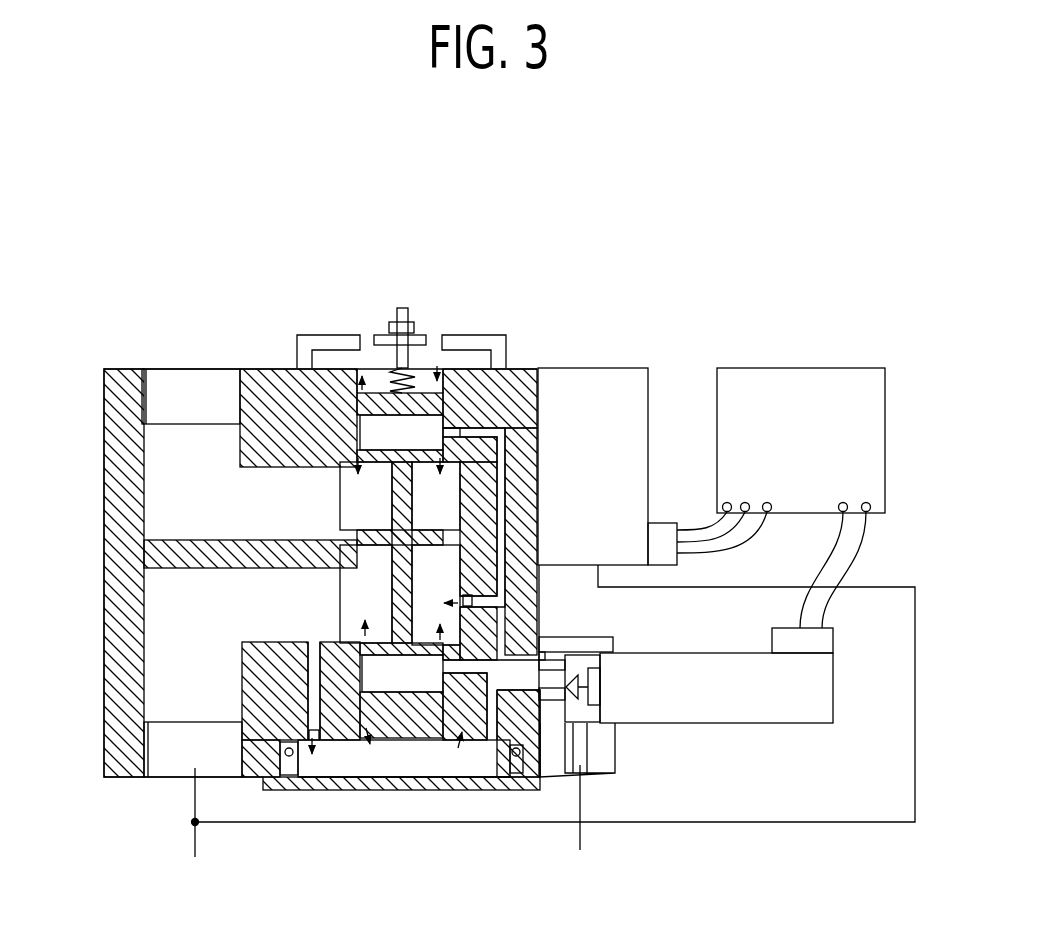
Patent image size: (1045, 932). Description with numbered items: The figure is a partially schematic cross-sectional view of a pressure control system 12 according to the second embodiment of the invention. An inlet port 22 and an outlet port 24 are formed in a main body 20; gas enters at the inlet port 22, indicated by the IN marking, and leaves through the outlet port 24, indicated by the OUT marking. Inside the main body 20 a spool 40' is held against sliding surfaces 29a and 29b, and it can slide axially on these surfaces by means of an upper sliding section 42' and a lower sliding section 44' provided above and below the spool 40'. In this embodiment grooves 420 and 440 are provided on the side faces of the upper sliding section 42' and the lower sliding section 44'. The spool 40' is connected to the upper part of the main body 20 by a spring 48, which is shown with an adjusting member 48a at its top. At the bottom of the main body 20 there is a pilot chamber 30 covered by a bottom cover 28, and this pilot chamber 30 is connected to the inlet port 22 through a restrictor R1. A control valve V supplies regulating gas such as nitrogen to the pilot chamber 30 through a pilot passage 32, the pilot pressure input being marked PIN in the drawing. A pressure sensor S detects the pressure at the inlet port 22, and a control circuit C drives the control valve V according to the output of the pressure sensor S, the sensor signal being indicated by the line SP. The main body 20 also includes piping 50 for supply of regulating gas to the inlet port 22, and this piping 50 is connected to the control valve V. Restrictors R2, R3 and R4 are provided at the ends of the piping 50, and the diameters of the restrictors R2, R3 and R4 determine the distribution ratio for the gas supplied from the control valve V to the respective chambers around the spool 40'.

The pressure control system 12 is at (118, 352).
The main body 20 is at (108, 598).
The inlet port 22 is at (172, 760).
The outlet port 24 is at (160, 380).
The bottom cover 28 is at (487, 789).
The pilot chamber 30 is at (436, 778).
The pilot passage 32 is at (545, 725).
The sliding surface 29a is at (376, 393).
The sliding surface 29b is at (370, 641).
The spring 48 is at (402, 380).
The adjusting nut 48a is at (401, 322).
The groove 420 is at (357, 448).
The upper sliding section 42' is at (366, 494).
The spool 40' is at (498, 494).
The groove 440 is at (318, 660).
The lower sliding section 44' is at (411, 716).
The piping 50 is at (539, 650).
The restrictor R1 is at (315, 745).
The restrictor R2 is at (432, 511).
The restrictor R3 is at (472, 598).
The restrictor R4 is at (491, 719).
The pressure sensor S is at (598, 385).
The control circuit C is at (805, 380).
The control valve V is at (733, 703).
The signal line SP is at (265, 823).
The inlet flow IN is at (195, 913).
The outlet flow OUT is at (193, 314).
The pilot pressure input PIN is at (580, 827).